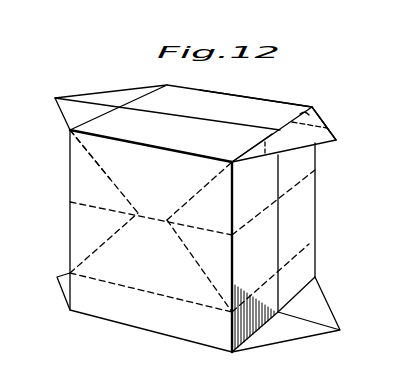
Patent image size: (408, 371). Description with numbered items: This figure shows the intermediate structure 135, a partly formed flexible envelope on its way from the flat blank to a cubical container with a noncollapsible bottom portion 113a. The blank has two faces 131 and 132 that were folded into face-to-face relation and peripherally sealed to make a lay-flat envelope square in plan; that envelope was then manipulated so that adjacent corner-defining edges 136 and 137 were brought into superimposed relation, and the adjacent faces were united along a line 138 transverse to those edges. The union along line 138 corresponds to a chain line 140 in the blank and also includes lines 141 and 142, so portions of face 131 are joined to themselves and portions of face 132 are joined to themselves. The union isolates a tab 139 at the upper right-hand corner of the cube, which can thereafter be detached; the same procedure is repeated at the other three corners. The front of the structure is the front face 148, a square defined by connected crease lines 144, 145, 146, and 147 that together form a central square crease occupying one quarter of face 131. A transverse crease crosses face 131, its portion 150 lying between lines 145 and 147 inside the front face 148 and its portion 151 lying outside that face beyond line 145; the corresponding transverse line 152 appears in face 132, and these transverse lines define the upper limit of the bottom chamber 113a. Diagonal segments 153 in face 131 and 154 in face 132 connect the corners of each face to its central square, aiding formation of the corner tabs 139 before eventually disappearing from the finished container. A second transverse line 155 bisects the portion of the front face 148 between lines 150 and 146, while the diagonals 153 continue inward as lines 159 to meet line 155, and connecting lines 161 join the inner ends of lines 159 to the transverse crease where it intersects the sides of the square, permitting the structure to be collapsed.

The noncollapsible bottom portion 113a is at (160, 326).
The face 131 is at (115, 118).
The face 132 is at (217, 100).
The intermediate structure 135 is at (279, 110).
The corner-defining edge 136 is at (280, 182).
The corner-defining edge 137 is at (242, 124).
The line of union 138 is at (319, 117).
The tab 139 is at (302, 144).
The line 140 is at (252, 151).
The line 141 is at (336, 128).
The line 142 is at (306, 108).
The crease line 144 is at (122, 285).
The crease line 145 is at (233, 243).
The crease line 146 is at (130, 137).
The crease line 147 is at (70, 235).
The front face 148 is at (82, 212).
The crease line portion 150 is at (148, 287).
The crease line portion 151 is at (253, 293).
The transverse line 152 is at (304, 250).
The diagonal segments 153 is at (302, 152).
The diagonal segments 154 is at (326, 120).
The second transverse line 155 is at (88, 203).
The diagonal crease lines 159 is at (184, 202).
The connecting lines 161 is at (177, 235).